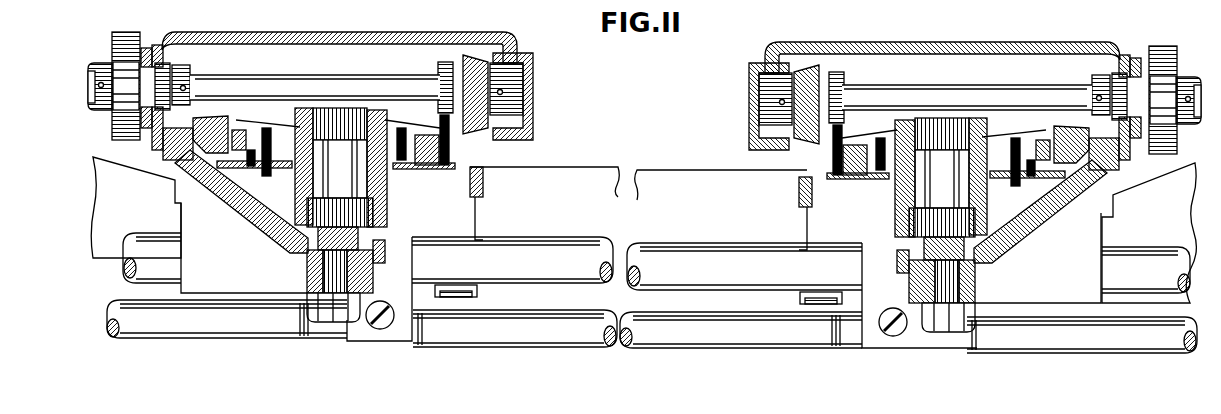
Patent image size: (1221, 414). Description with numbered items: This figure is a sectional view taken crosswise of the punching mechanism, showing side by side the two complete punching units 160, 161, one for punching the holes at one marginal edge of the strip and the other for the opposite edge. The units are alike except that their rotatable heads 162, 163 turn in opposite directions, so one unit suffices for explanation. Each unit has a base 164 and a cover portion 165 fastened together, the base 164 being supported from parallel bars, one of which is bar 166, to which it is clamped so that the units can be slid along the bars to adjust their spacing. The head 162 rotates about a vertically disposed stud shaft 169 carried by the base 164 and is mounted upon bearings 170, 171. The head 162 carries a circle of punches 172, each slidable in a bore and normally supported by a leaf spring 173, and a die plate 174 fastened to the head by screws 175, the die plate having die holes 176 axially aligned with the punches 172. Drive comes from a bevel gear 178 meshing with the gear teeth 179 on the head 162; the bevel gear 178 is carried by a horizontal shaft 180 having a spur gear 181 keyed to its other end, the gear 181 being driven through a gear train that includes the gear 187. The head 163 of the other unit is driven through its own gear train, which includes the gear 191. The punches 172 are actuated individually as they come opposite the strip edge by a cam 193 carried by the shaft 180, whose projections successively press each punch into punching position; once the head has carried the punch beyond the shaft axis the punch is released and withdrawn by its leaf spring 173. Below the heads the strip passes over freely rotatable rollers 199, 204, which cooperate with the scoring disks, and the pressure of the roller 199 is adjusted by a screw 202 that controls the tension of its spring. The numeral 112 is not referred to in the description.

The hub gear 112 is at (110, 113).
The gear 191 is at (143, 33).
The punching unit 161 is at (345, 26).
The rotatable head 163 is at (478, 143).
The roller 199 is at (460, 222).
The punching unit 160 is at (912, 37).
The bevel gear 178 is at (807, 58).
The cam 193 is at (845, 76).
The shaft 180 is at (947, 93).
The bearing 171 is at (967, 118).
The punch 172 is at (1067, 133).
The leaf spring 173 is at (1037, 133).
The cover portion 165 is at (1083, 46).
The gear 187 is at (1165, 50).
The spur gear 181 is at (1178, 77).
The rotatable head 162 is at (798, 148).
The die hole 176 is at (832, 186).
The roller 204 is at (822, 228).
The screw 175 is at (1013, 180).
The die plate 174 is at (1055, 180).
The bearing 170 is at (953, 223).
The base 164 is at (1035, 238).
The gear teeth 179 is at (1123, 153).
The bar 166 is at (1153, 248).
The screw 202 is at (899, 336).
The stud shaft 169 is at (985, 322).